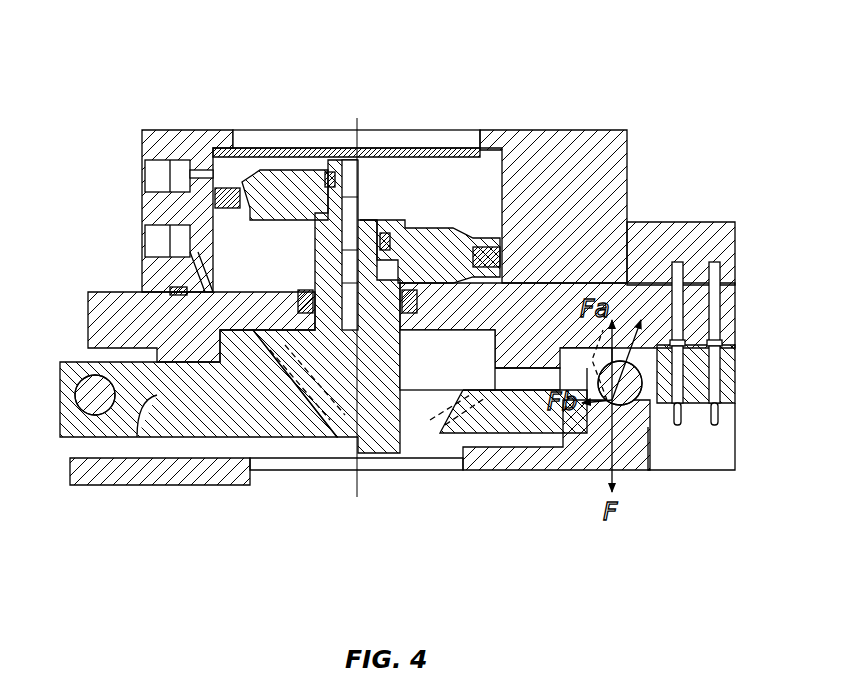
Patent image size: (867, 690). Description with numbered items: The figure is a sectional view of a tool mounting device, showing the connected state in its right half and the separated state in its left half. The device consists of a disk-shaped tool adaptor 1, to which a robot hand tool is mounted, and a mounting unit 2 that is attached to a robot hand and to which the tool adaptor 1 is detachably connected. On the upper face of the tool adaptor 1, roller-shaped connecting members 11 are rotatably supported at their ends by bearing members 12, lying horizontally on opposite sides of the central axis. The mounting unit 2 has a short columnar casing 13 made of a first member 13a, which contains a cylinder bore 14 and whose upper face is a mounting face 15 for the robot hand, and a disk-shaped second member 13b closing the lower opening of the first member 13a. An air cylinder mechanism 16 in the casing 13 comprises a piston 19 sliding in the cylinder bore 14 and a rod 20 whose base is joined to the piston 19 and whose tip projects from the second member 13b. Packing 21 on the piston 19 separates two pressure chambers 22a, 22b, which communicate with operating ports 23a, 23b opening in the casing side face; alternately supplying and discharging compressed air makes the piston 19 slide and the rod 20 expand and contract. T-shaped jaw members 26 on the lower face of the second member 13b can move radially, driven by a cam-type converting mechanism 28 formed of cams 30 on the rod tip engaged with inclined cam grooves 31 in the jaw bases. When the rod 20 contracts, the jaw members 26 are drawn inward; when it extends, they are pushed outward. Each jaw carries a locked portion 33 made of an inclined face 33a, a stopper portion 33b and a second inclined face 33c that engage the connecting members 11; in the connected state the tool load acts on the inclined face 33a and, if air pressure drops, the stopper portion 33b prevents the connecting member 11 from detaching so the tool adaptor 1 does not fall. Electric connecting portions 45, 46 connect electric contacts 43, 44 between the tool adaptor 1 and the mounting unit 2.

The tool adaptor 1 is at (490, 498).
The mounting unit 2 is at (680, 108).
The connecting member 11 is at (83, 378).
The bearing member 12 is at (678, 318).
The casing 13 is at (603, 37).
The first member 13a is at (567, 262).
The second member 13b is at (560, 283).
The cylinder bore 14 is at (462, 156).
The mounting face 15 is at (405, 130).
The air cylinder mechanism 16 is at (352, 128).
The piston 19 is at (290, 165).
The rod 20 is at (330, 250).
The packing 21 is at (212, 195).
The pressure chamber 22a is at (224, 158).
The pressure chamber 22b is at (170, 268).
The operating port 23a is at (150, 177).
The operating port 23b is at (160, 243).
The jaw member 26 is at (268, 428).
The converting mechanism 28 is at (398, 500).
The cam 30 is at (330, 440).
The cam groove 31 is at (465, 378).
The locked portion 33 is at (250, 545).
The inclined face 33a is at (195, 410).
The stopper portion 33b is at (150, 410).
The second inclined face 33c is at (112, 410).
The electric contact 43 is at (703, 273).
The electric contact 44 is at (700, 402).
The electric connecting portion 45 is at (724, 235).
The electric connecting portion 46 is at (722, 442).